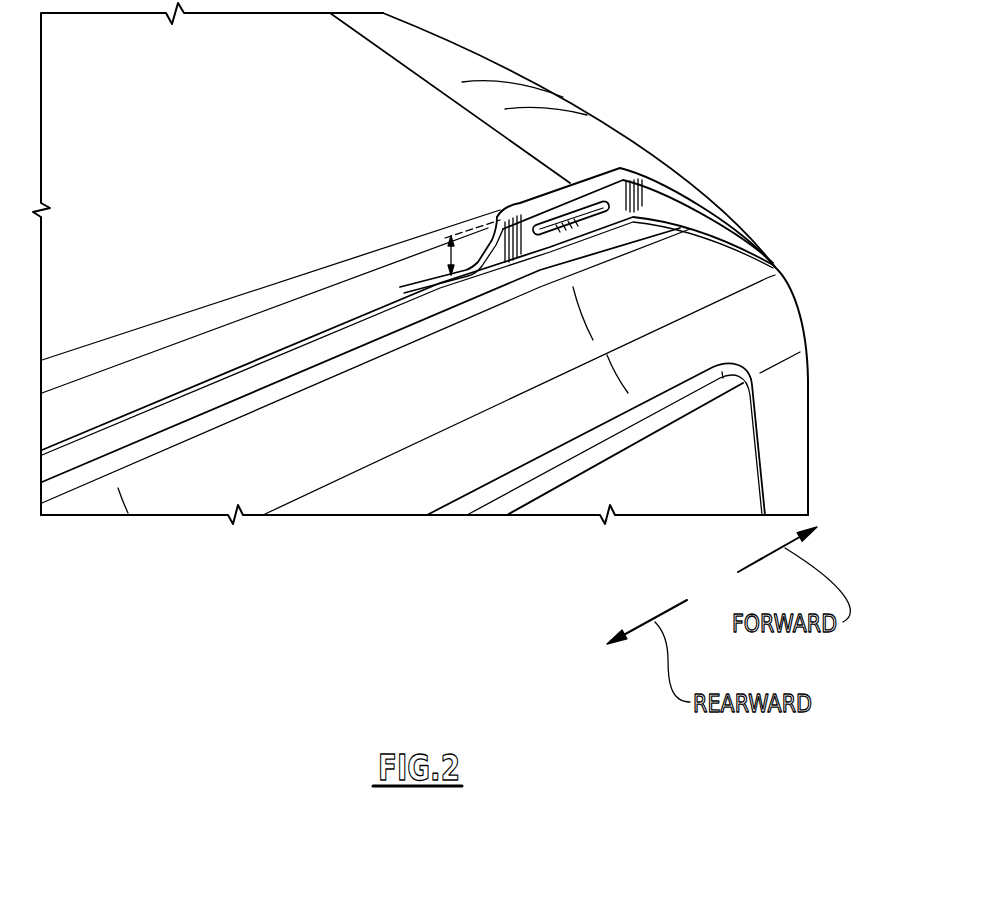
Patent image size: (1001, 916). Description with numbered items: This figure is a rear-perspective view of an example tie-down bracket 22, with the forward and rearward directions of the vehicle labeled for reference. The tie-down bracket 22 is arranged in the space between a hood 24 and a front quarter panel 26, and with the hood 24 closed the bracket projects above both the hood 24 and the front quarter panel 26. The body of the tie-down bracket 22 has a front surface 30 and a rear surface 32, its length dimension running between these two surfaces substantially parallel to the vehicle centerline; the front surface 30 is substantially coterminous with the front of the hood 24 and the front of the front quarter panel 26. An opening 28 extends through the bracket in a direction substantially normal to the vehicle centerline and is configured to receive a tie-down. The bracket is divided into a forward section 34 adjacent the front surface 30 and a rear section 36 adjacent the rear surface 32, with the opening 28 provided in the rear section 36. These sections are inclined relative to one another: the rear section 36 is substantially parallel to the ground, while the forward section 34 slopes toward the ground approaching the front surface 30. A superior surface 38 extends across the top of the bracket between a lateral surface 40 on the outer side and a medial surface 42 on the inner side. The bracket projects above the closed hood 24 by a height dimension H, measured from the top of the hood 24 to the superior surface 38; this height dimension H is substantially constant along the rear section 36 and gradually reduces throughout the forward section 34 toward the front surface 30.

The tie-down bracket 22 is at (765, 199).
The hood 24 is at (597, 138).
The front quarter panel 26 is at (758, 298).
The opening 28 is at (550, 232).
The front surface 30 is at (777, 260).
The rear surface 32 is at (492, 240).
The forward section 34 is at (725, 249).
The rear section 36 is at (596, 262).
The superior surface 38 is at (572, 190).
The lateral surface 40 is at (650, 197).
The medial surface 42 is at (623, 168).
The height dimension H is at (448, 264).